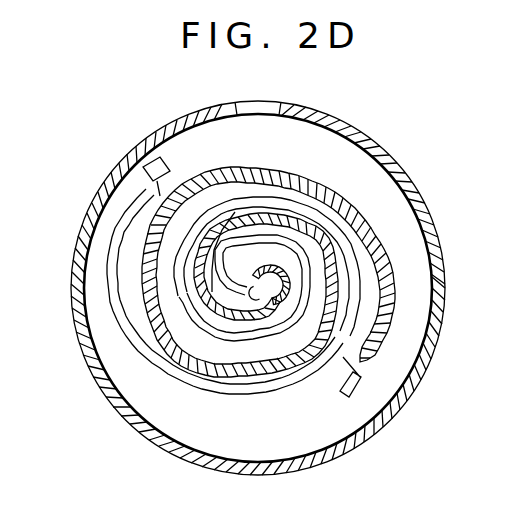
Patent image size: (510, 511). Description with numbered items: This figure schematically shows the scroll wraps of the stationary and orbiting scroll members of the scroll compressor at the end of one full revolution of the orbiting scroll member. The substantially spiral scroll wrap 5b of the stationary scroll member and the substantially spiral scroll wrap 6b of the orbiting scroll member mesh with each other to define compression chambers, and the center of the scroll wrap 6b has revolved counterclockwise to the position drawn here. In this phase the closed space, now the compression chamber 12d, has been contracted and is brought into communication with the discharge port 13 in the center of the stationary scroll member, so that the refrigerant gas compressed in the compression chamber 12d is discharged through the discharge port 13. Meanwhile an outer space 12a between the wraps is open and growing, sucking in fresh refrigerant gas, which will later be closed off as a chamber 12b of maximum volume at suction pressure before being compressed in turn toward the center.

The scroll wrap of the stationary scroll member 5b is at (395, 288).
The scroll wrap of the orbiting scroll member 6b is at (133, 336).
The space 12a is at (143, 167).
The chamber 12b is at (277, 205).
The compression chamber 12d is at (263, 258).
The discharge port 13 is at (264, 300).